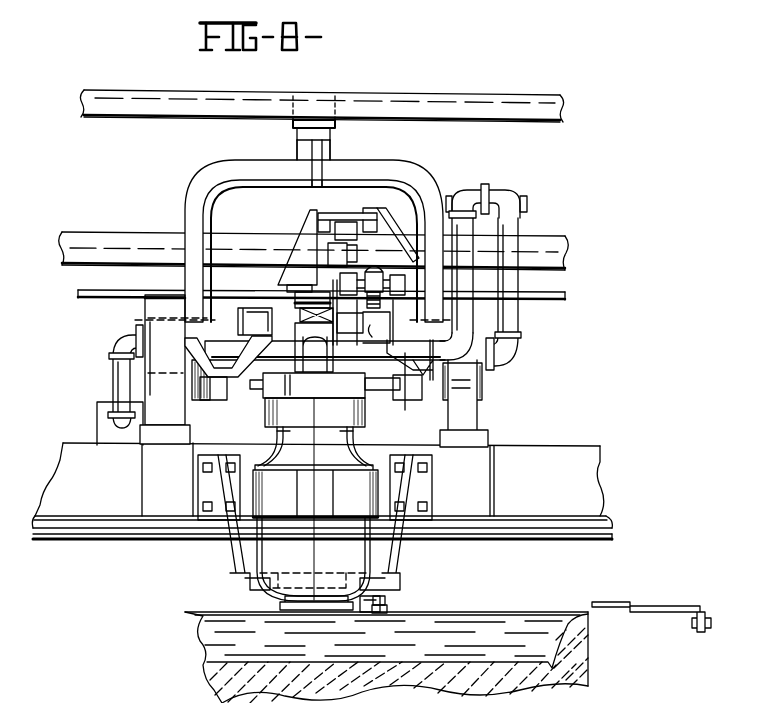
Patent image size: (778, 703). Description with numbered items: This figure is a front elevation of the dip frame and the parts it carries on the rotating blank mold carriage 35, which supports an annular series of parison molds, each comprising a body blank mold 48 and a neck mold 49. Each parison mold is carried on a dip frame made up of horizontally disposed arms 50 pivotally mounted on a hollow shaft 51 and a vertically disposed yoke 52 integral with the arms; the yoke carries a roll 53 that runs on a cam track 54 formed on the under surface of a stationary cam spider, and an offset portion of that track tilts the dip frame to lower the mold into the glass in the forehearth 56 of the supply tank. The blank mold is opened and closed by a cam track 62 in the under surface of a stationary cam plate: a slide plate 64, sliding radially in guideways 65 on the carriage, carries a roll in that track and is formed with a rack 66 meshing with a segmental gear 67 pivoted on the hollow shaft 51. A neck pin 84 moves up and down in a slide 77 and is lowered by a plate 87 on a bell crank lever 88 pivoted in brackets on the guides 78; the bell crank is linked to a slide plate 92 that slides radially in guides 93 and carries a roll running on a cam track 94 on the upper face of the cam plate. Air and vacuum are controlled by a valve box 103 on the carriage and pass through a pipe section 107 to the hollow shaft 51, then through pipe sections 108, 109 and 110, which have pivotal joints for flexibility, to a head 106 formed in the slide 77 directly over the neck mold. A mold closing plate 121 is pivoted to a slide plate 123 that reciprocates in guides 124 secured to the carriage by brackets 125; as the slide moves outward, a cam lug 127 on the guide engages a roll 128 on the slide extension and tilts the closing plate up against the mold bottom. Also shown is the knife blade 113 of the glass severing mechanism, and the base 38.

The cam track 54 is at (427, 75).
The roll 53 is at (342, 118).
The yoke 52 is at (386, 171).
The cam track 94 is at (274, 246).
The cam track 62 is at (174, 262).
The pipe section 108 is at (518, 224).
The pipe section 109 is at (463, 284).
The pipe section 107 is at (112, 385).
The valve box 103 is at (97, 427).
The base frame 38 is at (538, 454).
The blank mold carriage 35 is at (112, 516).
The guides 78 is at (179, 369).
The arms 50 is at (203, 391).
The slide 77 is at (250, 386).
The slide plate 92 is at (338, 217).
The guides 93 is at (378, 205).
The hollow shaft 51 is at (233, 321).
The slide plate 64 is at (383, 233).
The guideways 65 is at (340, 283).
The bell crank lever 88 is at (290, 288).
The plate 87 is at (294, 305).
The rack 66 is at (405, 273).
The segmental gear 67 is at (381, 303).
The neck pin 84 is at (363, 327).
The pipe section 110 is at (404, 360).
The head 106 is at (342, 395).
The neck mold 49 is at (353, 416).
The body blank mold 48 is at (350, 455).
The slide plate 123 is at (352, 564).
The brackets 125 is at (228, 549).
The mold closing plate 121 is at (280, 608).
The guides 124 is at (382, 598).
The cam lug 127 is at (386, 607).
The roll 128 is at (380, 613).
The forehearth 56 is at (584, 666).
The knife blade 113 is at (634, 596).